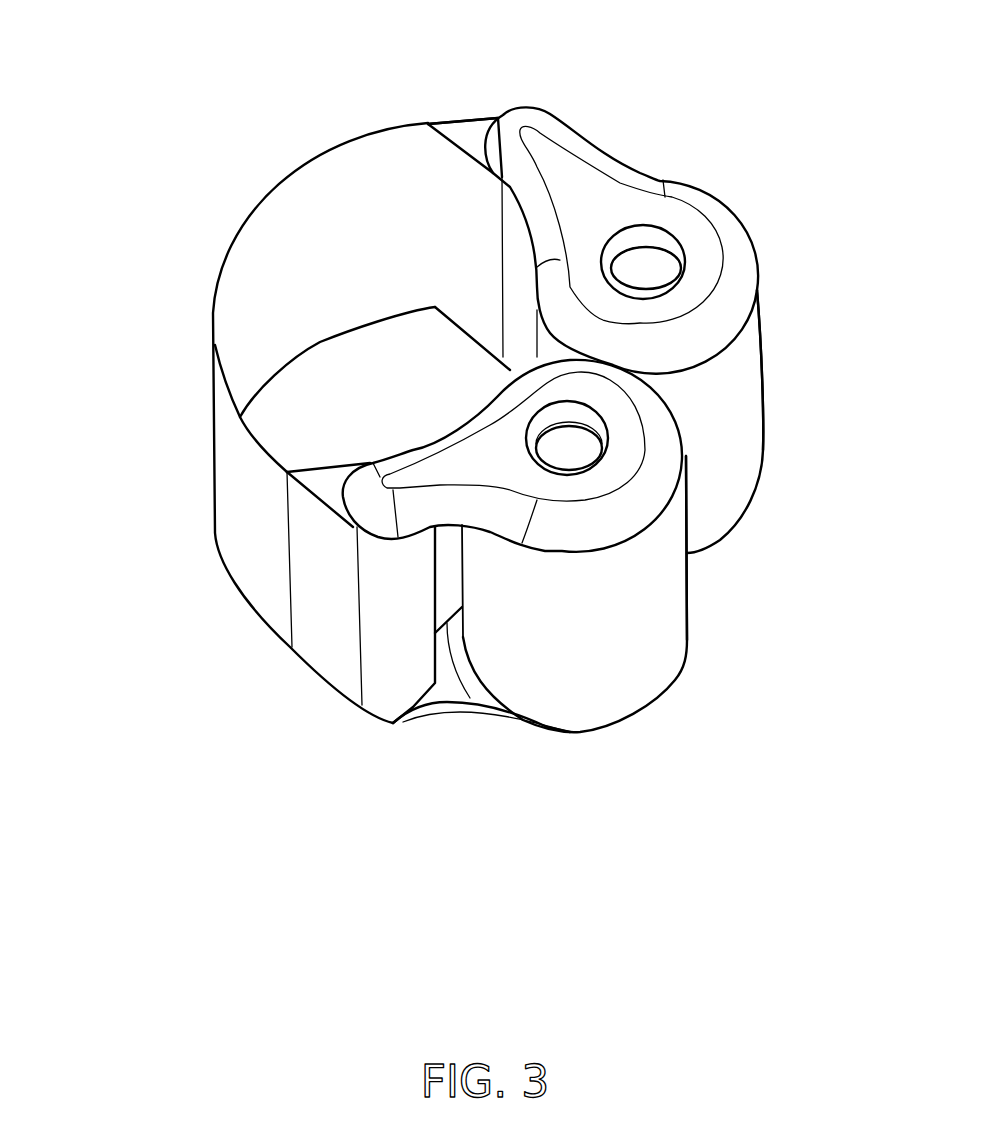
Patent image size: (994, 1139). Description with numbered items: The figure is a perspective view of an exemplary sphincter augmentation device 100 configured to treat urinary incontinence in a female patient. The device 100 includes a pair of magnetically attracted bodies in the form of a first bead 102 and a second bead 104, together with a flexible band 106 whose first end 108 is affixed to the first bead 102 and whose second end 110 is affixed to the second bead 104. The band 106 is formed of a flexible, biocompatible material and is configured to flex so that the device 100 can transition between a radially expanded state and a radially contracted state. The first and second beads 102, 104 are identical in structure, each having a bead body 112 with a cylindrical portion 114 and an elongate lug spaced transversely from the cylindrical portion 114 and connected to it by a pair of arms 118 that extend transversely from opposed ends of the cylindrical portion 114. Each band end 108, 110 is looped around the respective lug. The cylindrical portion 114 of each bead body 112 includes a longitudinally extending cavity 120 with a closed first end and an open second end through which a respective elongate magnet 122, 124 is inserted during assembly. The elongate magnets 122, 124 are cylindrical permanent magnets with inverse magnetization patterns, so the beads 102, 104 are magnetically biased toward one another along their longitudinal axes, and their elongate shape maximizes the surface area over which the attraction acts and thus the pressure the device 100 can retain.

The sphincter augmentation device 100 is at (120, 92).
The first bead 102 is at (537, 613).
The second bead 104 is at (750, 232).
The flexible band 106 is at (212, 297).
The first end 108 is at (327, 625).
The second end 110 is at (467, 120).
The bead body 112 is at (760, 326).
The cylindrical portion 114 is at (742, 388).
The arms 118 is at (547, 152).
The cavity 120 is at (630, 225).
The elongate magnet 122 is at (575, 452).
The elongate magnet 124 is at (653, 263).